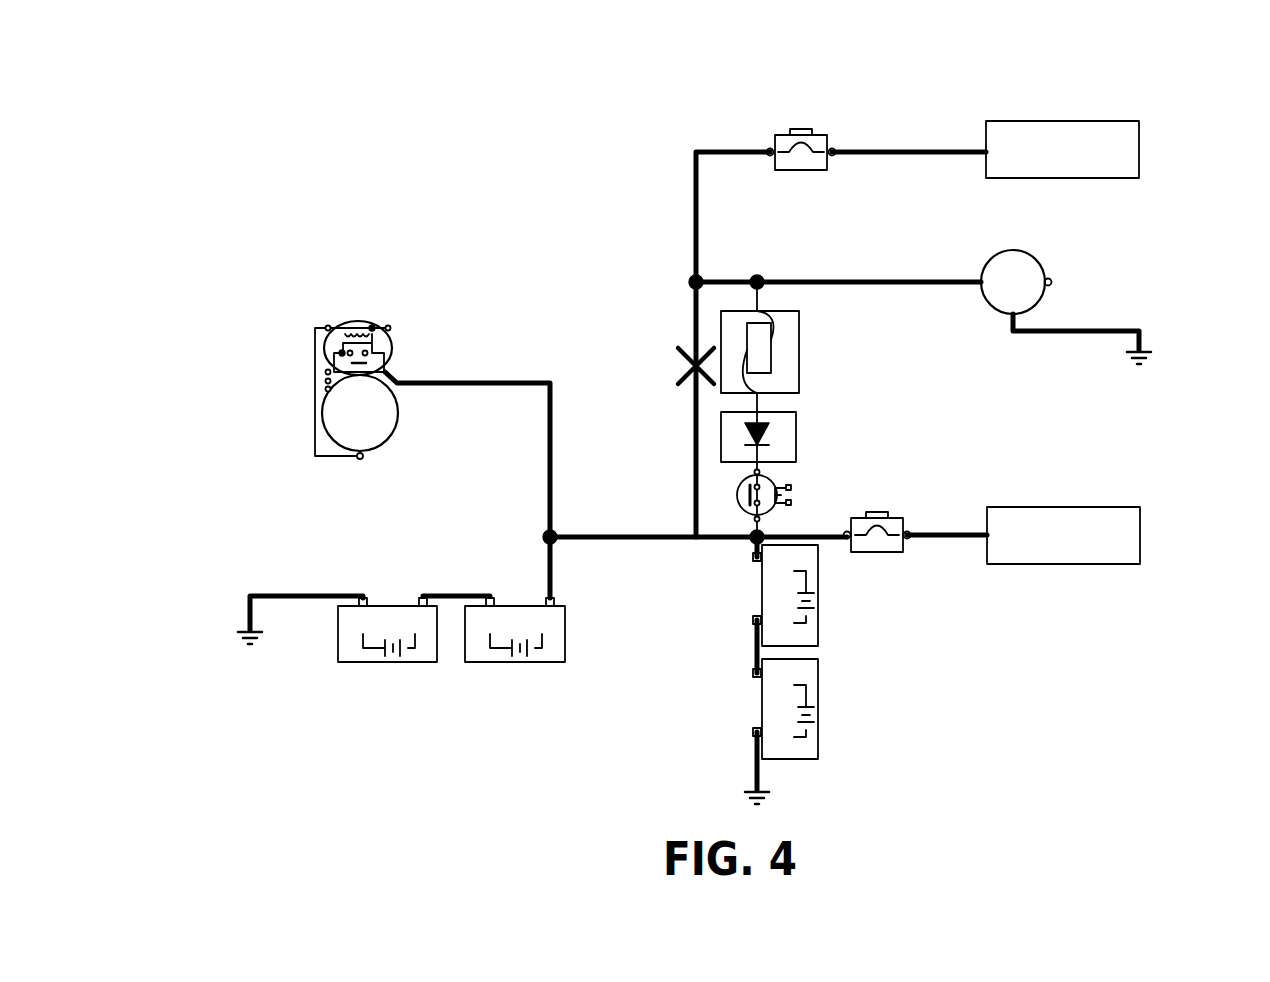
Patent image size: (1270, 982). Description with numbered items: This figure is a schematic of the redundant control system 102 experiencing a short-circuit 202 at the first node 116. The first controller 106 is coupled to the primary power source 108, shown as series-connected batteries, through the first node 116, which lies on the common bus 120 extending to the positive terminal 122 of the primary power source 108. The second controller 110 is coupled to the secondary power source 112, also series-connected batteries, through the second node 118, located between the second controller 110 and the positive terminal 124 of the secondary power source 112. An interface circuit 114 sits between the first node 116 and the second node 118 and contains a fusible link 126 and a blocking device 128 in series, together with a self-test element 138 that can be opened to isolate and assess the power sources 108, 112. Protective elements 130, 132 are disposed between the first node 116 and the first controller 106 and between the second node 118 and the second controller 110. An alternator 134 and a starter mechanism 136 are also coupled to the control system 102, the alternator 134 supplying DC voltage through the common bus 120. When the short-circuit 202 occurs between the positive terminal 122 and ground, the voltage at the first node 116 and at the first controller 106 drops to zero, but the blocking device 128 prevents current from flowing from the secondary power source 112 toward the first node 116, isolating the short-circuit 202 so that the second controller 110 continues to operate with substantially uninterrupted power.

The control system 102 is at (490, 190).
The first controller 106 is at (1140, 150).
The primary power source 108 is at (336, 671).
The second controller 110 is at (1040, 565).
The secondary power source 112 is at (832, 690).
The interface circuit 114 is at (855, 392).
The first node 116 is at (694, 281).
The second node 118 is at (754, 533).
The common bus 120 is at (583, 535).
The positive terminal 122 is at (545, 598).
The positive terminal 124 is at (753, 562).
The fusible link 126 is at (799, 330).
The blocking device 128 is at (796, 435).
The protective element 130 is at (802, 170).
The protective element 132 is at (878, 553).
The alternator 134 is at (1043, 262).
The starter mechanism 136 is at (393, 345).
The self-test element 138 is at (777, 484).
The short-circuit 202 is at (688, 362).